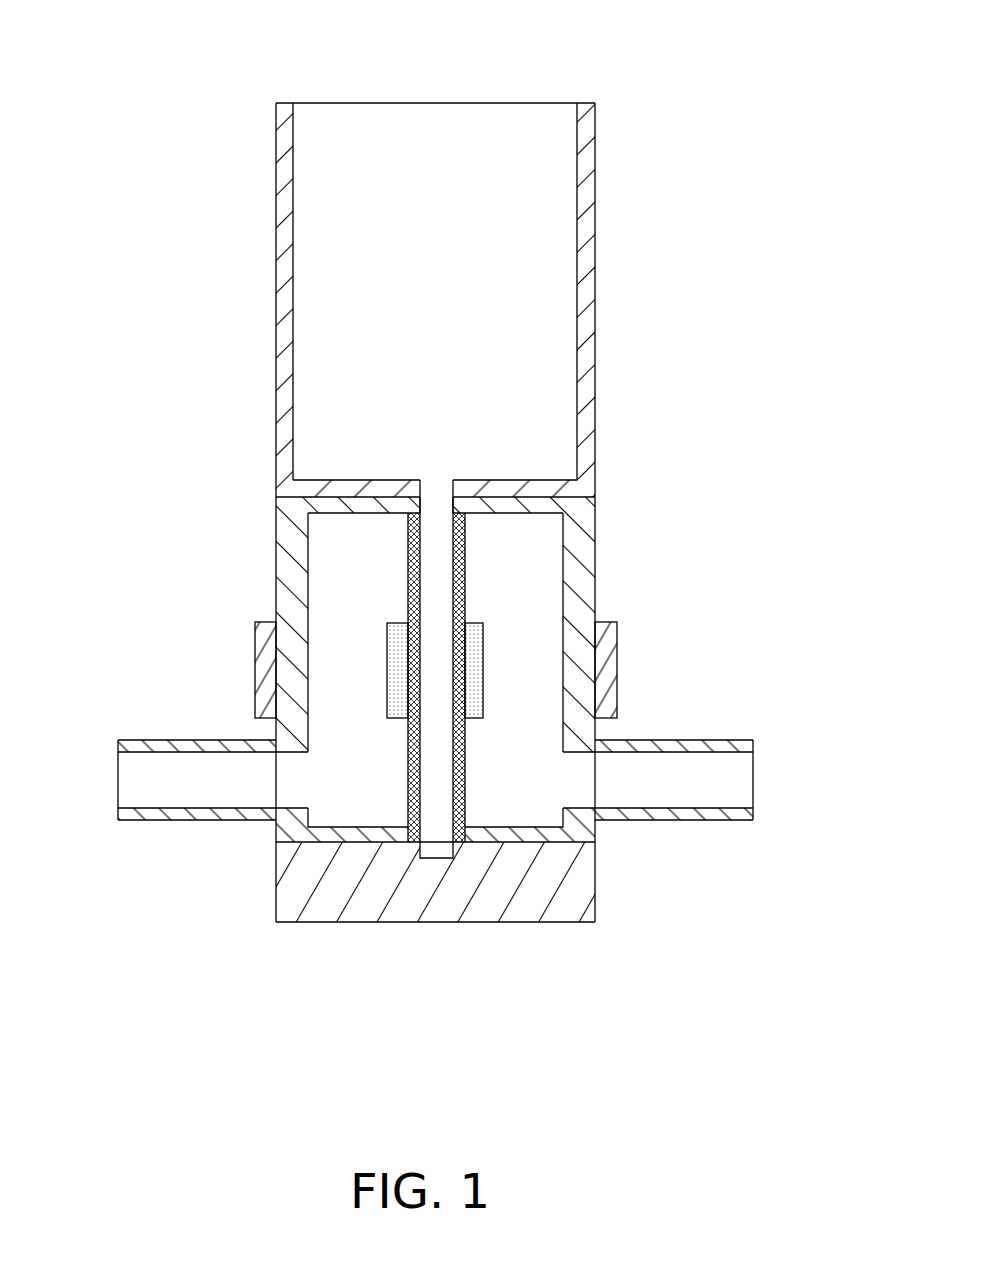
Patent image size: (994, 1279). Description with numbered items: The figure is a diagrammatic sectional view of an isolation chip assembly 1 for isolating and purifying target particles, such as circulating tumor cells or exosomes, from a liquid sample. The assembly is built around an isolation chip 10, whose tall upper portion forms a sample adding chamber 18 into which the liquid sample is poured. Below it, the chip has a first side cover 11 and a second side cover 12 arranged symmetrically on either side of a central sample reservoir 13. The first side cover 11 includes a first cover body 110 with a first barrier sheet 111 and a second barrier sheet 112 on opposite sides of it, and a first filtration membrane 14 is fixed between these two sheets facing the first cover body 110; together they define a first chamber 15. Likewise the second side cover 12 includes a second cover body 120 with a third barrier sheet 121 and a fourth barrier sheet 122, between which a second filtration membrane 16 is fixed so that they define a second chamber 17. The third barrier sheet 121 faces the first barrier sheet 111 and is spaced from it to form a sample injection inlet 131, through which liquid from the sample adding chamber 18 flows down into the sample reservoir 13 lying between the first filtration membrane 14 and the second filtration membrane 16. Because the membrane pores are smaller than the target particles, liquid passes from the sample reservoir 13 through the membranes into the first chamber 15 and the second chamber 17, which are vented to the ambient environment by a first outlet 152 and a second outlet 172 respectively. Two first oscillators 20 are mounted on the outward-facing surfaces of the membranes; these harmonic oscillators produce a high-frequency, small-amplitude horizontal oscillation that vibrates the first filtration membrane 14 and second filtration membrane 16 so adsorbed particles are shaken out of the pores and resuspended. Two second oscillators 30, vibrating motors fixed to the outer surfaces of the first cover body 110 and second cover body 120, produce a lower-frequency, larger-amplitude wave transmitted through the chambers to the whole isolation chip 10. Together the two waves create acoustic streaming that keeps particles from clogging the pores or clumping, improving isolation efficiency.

The isolation chip assembly 1 is at (255, 53).
The isolation chip 10 is at (597, 173).
The sample adding chamber 18 is at (430, 122).
The first filtration membrane 14 is at (403, 517).
The second filtration membrane 16 is at (545, 500).
The sample reservoir 13 is at (440, 553).
The sample injection inlet 131 is at (435, 485).
The first side cover 11 is at (291, 669).
The first barrier sheet 111 is at (337, 508).
The first cover body 110 is at (293, 554).
The second barrier sheet 112 is at (358, 835).
The second side cover 12 is at (589, 669).
The third barrier sheet 121 is at (540, 509).
The second cover body 120 is at (580, 553).
The fourth barrier sheet 122 is at (512, 833).
The first chamber 15 is at (373, 818).
The first outlet 152 is at (292, 772).
The second chamber 17 is at (489, 816).
The second outlet 172 is at (577, 773).
The first oscillator 20 is at (472, 690).
The second oscillator 30 is at (265, 663).